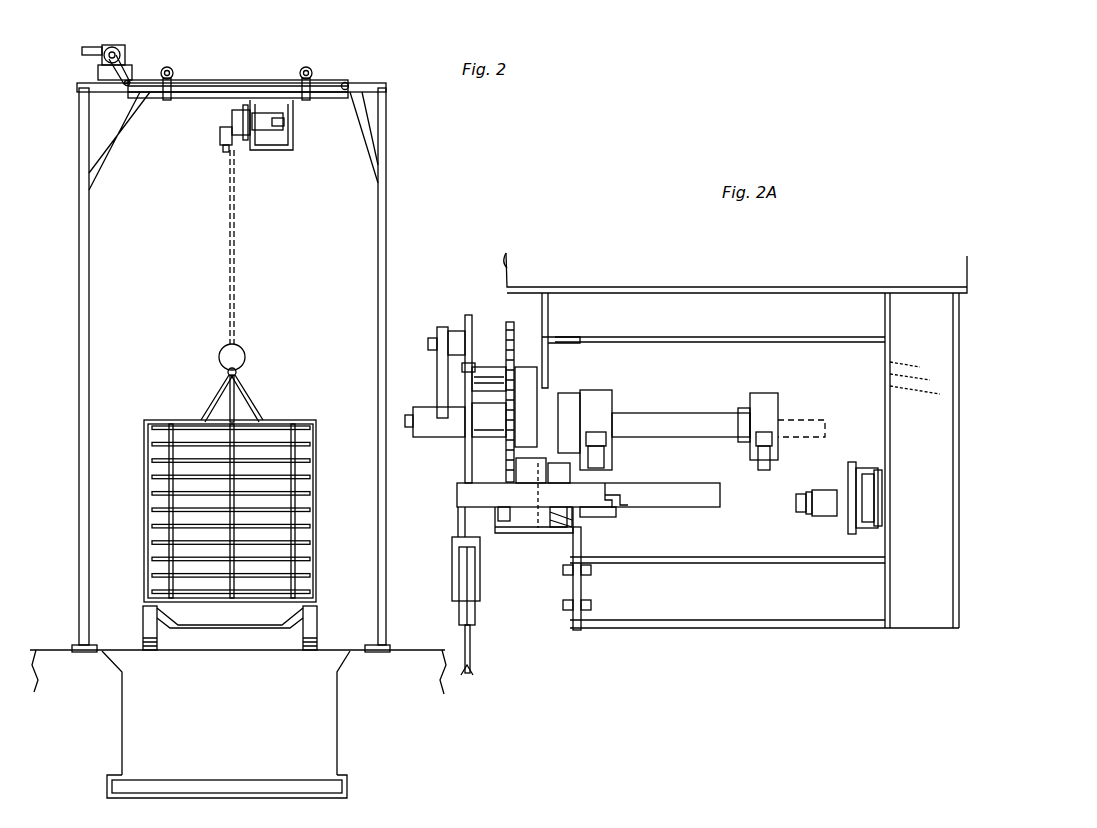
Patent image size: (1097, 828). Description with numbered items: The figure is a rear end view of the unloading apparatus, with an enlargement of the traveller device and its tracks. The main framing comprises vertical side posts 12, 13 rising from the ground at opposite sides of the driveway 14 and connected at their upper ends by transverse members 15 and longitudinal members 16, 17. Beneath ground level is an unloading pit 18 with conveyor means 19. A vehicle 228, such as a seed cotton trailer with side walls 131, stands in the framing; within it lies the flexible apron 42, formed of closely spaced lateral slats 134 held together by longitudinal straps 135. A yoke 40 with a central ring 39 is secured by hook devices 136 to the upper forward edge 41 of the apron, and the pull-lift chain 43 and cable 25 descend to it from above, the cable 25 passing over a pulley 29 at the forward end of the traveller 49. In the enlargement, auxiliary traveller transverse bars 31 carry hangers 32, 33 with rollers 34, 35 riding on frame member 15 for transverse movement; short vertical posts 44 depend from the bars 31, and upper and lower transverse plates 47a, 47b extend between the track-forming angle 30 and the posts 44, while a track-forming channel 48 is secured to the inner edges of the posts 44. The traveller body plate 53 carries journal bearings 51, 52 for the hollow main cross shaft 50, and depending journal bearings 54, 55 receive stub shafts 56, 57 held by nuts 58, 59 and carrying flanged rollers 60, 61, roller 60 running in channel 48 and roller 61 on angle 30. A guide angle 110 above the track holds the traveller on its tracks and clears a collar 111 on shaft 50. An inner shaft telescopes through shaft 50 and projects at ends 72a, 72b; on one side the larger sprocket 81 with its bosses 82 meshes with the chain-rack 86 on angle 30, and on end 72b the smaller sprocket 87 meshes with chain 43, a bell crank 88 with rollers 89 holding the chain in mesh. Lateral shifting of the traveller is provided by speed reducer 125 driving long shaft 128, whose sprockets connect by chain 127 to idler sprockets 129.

In FIG. 2, the vertical side post 12 is at (387, 273).
In FIG. 2, the vertical side post 13 is at (79, 273).
In FIG. 2, the driveway 14 is at (232, 650).
In FIG. 2, the transverse member 15 is at (372, 83).
In FIG. 2, the longitudinal member 16 is at (387, 86).
In FIG. 2, the longitudinal member 17 is at (79, 86).
In FIG. 2, the unloading pit 18 is at (238, 716).
In FIG. 2, the conveyor means 19 is at (234, 779).
In FIG. 2A, the cable 25 is at (474, 660).
In FIG. 2, the pulley 29 is at (222, 152).
In FIG. 2A, the pulley 29 is at (478, 610).
In FIG. 2, the track-forming angle 30 is at (246, 148).
In FIG. 2A, the track-forming angle 30 is at (562, 584).
In FIG. 2A, the auxiliary traveller transverse bar 31 is at (505, 293).
In FIG. 2, the hanger 32 is at (313, 100).
In FIG. 2, the hanger 33 is at (157, 100).
In FIG. 2, the roller 34 is at (310, 67).
In FIG. 2, the roller 35 is at (172, 68).
In FIG. 2, the ring 39 is at (237, 374).
In FIG. 2, the yoke 40 is at (253, 402).
In FIG. 2, the upper forward edge 41 is at (218, 408).
In FIG. 2, the flexible apron 42 is at (304, 474).
In FIG. 2, the pull-lift chain 43 is at (236, 290).
In FIG. 2A, the pull-lift chain 43 is at (476, 366).
In FIG. 2A, the short vertical post 44 is at (918, 608).
In FIG. 2A, the upper transverse plate 47a is at (686, 330).
In FIG. 2A, the lower transverse plate 47b is at (692, 607).
In FIG. 2A, the track-forming channel 48 is at (876, 462).
In FIG. 2, the traveller 49 is at (268, 105).
In FIG. 2A, the traveller 49 is at (732, 388).
In FIG. 2A, the main cross shaft 50 is at (676, 412).
In FIG. 2A, the journal bearing 51 is at (762, 393).
In FIG. 2A, the journal bearing 52 is at (592, 395).
In FIG. 2A, the traveller body plate 53 is at (726, 488).
In FIG. 2A, the journal bearing 54 is at (822, 516).
In FIG. 2A, the journal bearing 55 is at (594, 518).
In FIG. 2A, the stub shaft 56 is at (797, 505).
In FIG. 2A, the stub shaft 57 is at (640, 505).
In FIG. 2A, the nut 58 is at (808, 516).
In FIG. 2A, the nut 59 is at (608, 517).
In FIG. 2A, the flanged roller 60 is at (880, 500).
In FIG. 2A, the flanged roller 61 is at (560, 480).
In FIG. 2A, the inner shaft projecting end 72a is at (826, 420).
In FIG. 2A, the inner shaft projecting end 72b is at (400, 442).
In FIG. 2A, the first larger sprocket 81 is at (513, 330).
In FIG. 2A, the boss 82 is at (530, 425).
In FIG. 2A, the chain-rack 86 is at (500, 530).
In FIG. 2A, the second smaller sprocket 87 is at (457, 482).
In FIG. 2A, the bell crank 88 is at (436, 373).
In FIG. 2A, the roller 89 is at (463, 320).
In FIG. 2A, the guide angle 110 is at (553, 360).
In FIG. 2A, the collar 111 is at (540, 400).
In FIG. 2, the speed reducer 125 is at (88, 46).
In FIG. 2, the chain 127 is at (145, 80).
In FIG. 2, the long shaft 128 is at (122, 88).
In FIG. 2, the idler sprocket 129 is at (345, 82).
In FIG. 2, the side wall 131 is at (317, 522).
In FIG. 2, the lateral slat 134 is at (306, 498).
In FIG. 2, the longitudinal strap 135 is at (306, 556).
In FIG. 2, the hook device 136 is at (268, 422).
In FIG. 2, the vehicle 228 is at (144, 565).